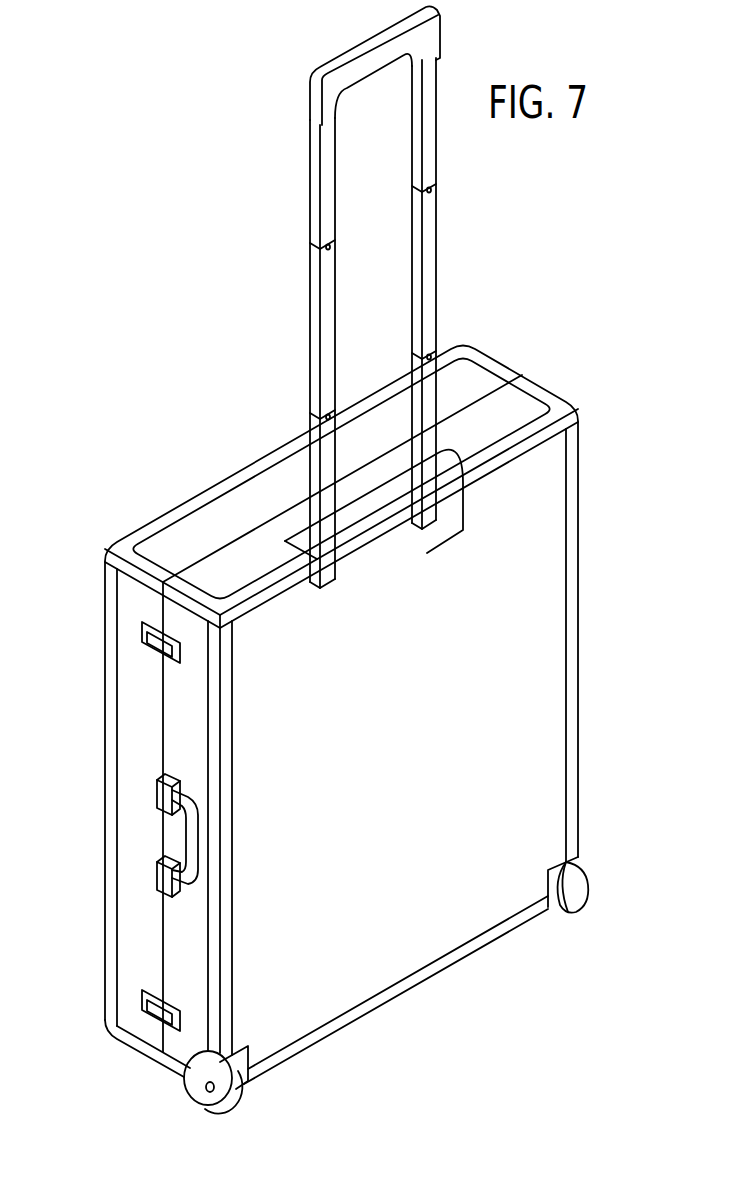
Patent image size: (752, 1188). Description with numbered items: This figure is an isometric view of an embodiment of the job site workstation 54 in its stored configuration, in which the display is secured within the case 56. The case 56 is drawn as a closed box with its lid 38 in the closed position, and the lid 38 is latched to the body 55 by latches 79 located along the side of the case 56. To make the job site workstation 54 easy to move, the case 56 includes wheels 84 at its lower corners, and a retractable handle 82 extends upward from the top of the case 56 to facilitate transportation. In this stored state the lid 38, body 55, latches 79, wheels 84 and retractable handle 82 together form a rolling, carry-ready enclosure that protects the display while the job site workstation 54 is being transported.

The job site workstation 54 is at (262, 228).
The retractable handle 82 is at (345, 60).
The case 56 is at (222, 478).
The body 55 is at (180, 706).
The latches 79 is at (156, 650).
The lid 38 is at (130, 866).
The wheels 84 is at (589, 897).